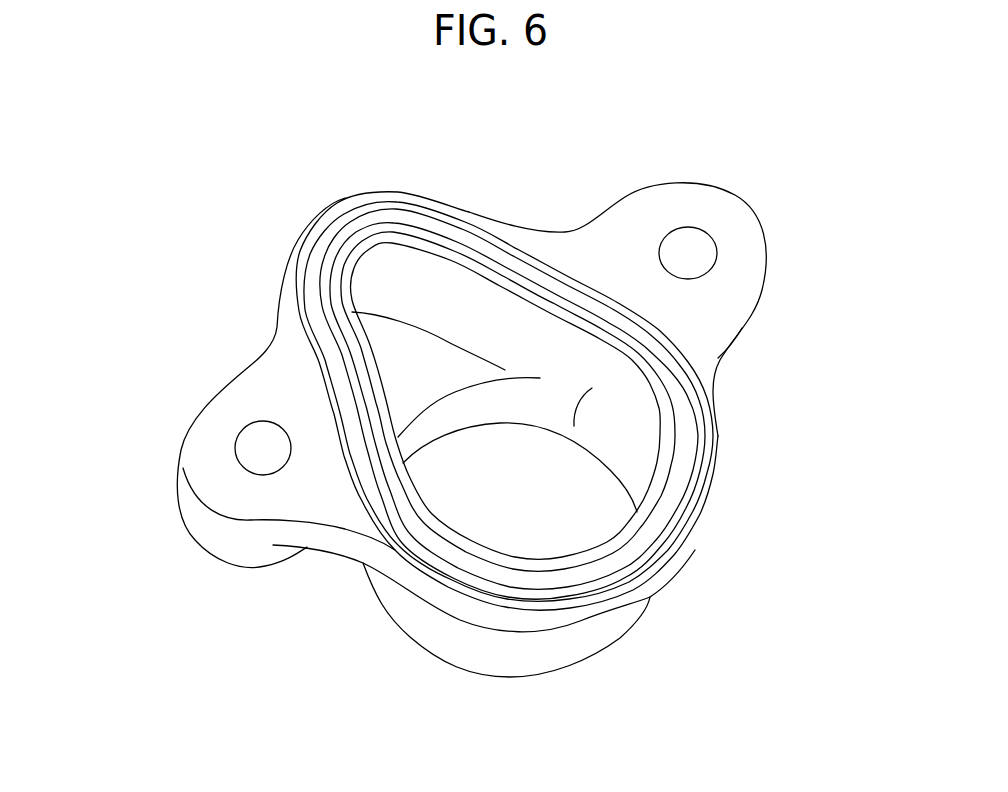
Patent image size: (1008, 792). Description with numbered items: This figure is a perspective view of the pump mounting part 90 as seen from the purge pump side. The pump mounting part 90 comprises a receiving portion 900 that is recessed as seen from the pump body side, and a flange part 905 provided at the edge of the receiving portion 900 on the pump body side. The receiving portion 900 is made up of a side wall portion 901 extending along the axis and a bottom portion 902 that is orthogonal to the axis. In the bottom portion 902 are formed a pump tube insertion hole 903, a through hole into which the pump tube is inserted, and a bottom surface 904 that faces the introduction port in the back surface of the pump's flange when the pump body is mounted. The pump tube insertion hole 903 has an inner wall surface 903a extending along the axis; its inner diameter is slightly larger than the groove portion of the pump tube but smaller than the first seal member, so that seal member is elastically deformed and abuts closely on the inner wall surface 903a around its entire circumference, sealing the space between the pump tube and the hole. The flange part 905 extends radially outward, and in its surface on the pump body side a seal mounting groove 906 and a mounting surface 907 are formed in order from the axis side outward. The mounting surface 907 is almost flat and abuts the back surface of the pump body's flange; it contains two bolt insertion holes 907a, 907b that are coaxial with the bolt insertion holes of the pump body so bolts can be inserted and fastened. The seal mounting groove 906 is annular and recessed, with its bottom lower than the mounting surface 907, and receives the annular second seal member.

The pump mounting part 90 is at (828, 114).
The receiving portion 900 is at (430, 633).
The side wall portion 901 is at (470, 312).
The bottom portion 902 is at (535, 343).
The pump tube insertion hole 903 is at (551, 486).
The inner wall surface 903a is at (592, 388).
The bottom surface 904 is at (409, 365).
The flange part 905 is at (243, 365).
The seal mounting groove 906 is at (317, 292).
The mounting surface 907 is at (295, 390).
The bolt insertion hole 907a is at (278, 442).
The bolt insertion hole 907b is at (672, 253).